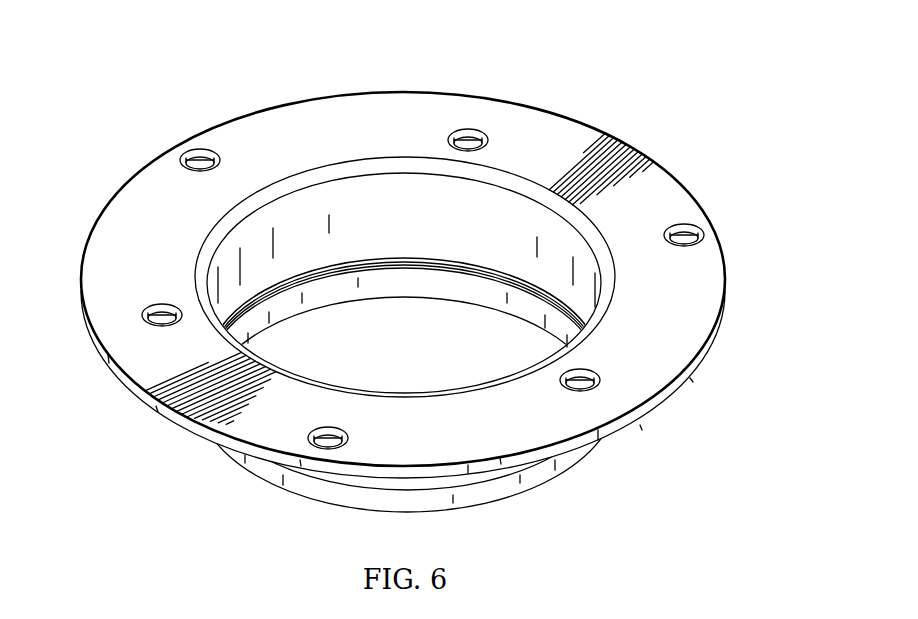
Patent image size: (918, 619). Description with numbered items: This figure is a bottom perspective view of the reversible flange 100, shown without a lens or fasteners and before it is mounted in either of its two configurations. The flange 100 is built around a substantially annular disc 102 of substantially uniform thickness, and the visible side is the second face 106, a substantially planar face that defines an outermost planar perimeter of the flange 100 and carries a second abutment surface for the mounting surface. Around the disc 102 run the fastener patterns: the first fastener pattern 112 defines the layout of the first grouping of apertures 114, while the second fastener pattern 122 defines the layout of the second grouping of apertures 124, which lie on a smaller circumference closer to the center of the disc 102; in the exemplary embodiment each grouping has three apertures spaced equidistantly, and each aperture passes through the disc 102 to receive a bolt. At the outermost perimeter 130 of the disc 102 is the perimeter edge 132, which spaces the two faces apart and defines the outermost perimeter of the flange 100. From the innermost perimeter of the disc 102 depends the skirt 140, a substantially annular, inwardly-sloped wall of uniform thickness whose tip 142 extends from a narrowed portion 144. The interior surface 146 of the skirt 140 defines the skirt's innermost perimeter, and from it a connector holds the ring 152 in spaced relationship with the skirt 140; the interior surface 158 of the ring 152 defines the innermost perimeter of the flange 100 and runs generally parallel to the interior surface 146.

The reversible flange 100 is at (692, 84).
The annular disc 102 is at (376, 285).
The second face 106 is at (141, 176).
The first fastener pattern 112 is at (205, 152).
The first grouping of apertures 114 is at (193, 157).
The second fastener pattern 122 is at (168, 300).
The second grouping of apertures 124 is at (150, 305).
The outermost perimeter 130 is at (93, 346).
The perimeter edge 132 is at (138, 390).
The skirt 140 is at (407, 456).
The tip 142 is at (548, 478).
The narrowed portion 144 is at (503, 490).
The interior surface of the skirt 146 is at (299, 203).
The ring 152 is at (404, 366).
The interior surface of the ring 158 is at (450, 297).